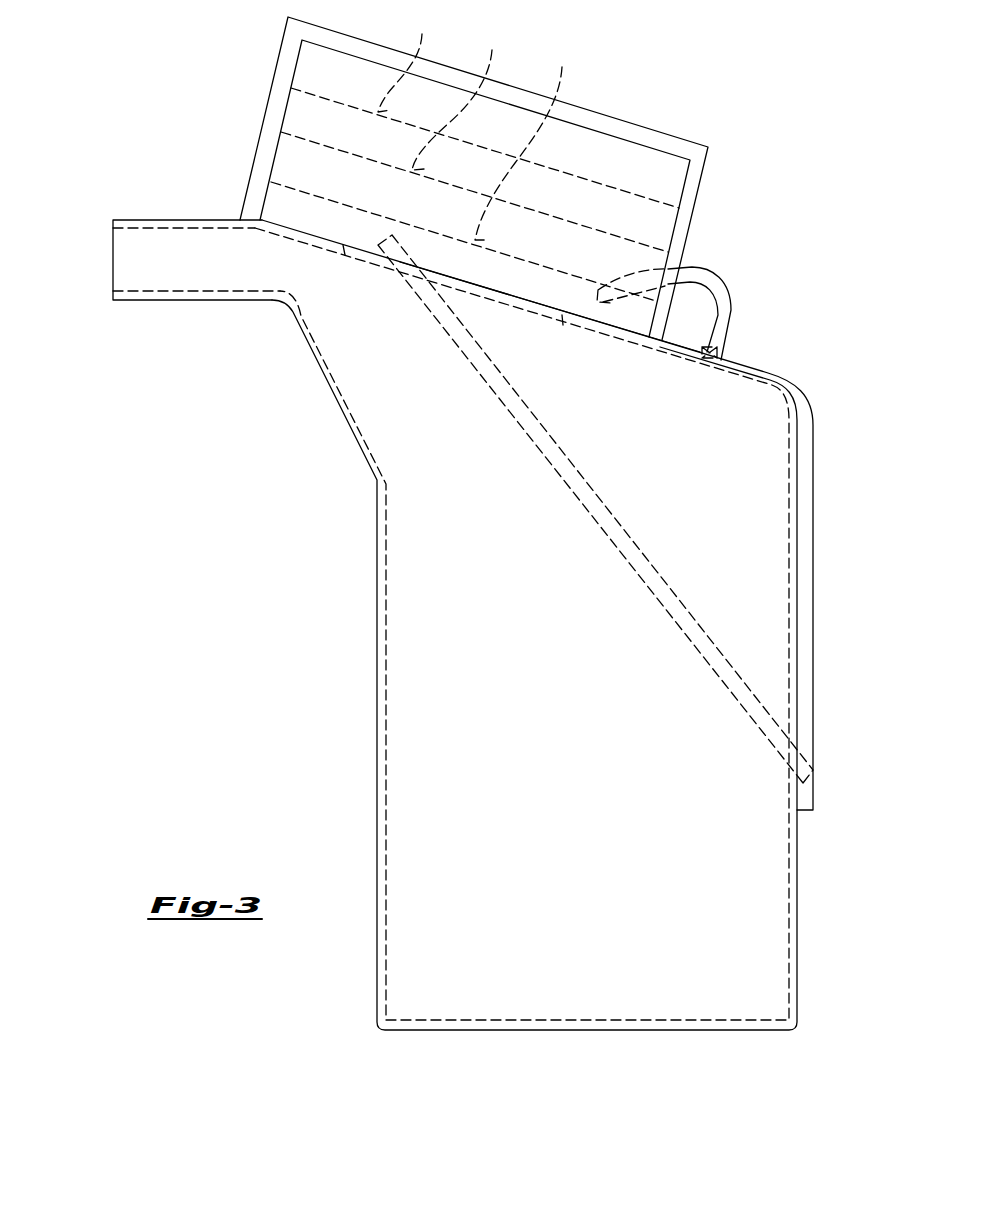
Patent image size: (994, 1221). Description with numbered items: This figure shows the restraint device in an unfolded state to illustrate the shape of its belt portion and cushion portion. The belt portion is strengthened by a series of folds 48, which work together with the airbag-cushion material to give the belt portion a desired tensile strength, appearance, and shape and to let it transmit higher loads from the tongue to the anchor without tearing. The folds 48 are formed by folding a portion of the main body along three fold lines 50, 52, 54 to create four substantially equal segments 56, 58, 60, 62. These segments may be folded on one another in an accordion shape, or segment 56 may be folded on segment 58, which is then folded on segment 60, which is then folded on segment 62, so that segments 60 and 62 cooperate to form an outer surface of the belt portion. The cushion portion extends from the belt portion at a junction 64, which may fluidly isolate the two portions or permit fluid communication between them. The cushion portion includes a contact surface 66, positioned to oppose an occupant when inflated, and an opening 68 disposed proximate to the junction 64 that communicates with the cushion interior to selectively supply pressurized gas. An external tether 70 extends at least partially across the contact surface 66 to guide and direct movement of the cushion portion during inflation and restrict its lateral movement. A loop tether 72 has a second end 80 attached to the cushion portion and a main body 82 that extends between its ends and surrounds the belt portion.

The folds 48 is at (640, 150).
The fold line 50 is at (406, 60).
The fold line 52 is at (458, 98).
The fold line 54 is at (523, 142).
The segment 56 is at (327, 73).
The segment 58 is at (317, 117).
The segment 60 is at (300, 165).
The segment 62 is at (292, 208).
The junction 64 is at (614, 337).
The contact surface 66 is at (588, 958).
The opening 68 is at (143, 229).
The external tether 70 is at (637, 540).
The loop tether 72 is at (731, 300).
The second end 80 is at (708, 350).
The main body 82 is at (700, 273).